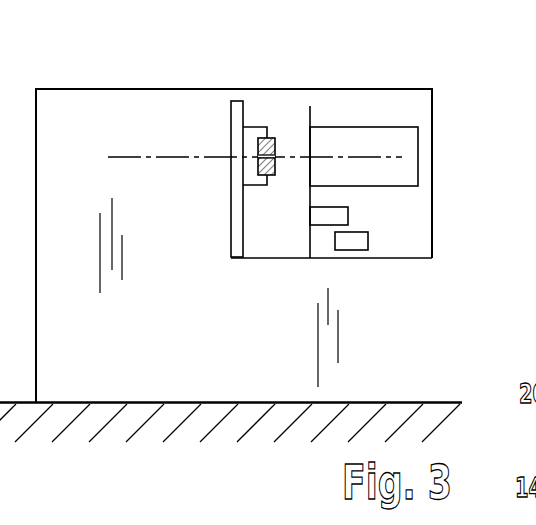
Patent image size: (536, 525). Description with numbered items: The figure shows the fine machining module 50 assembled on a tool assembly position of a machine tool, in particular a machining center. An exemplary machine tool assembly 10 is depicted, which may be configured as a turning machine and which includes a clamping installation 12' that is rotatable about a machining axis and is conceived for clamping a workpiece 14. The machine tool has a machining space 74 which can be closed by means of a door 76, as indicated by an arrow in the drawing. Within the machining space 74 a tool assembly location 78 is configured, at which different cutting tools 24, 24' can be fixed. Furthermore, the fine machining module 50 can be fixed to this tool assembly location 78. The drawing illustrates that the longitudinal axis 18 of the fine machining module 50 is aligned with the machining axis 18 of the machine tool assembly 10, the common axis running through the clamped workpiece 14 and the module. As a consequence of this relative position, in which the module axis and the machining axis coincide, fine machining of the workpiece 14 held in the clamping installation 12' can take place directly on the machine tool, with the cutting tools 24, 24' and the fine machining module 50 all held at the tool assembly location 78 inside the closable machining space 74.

The machine tool assembly 10 is at (486, 91).
The clamping installation 12' is at (211, 175).
The workpiece 14 is at (269, 137).
The longitudinal axis 18 is at (357, 150).
The cutting tool 24 is at (410, 198).
The cutting tool 24' is at (426, 245).
The fine machining module 50 is at (382, 121).
The machining space 74 is at (290, 121).
The door 76 is at (235, 117).
The tool assembly location 78 is at (413, 218).